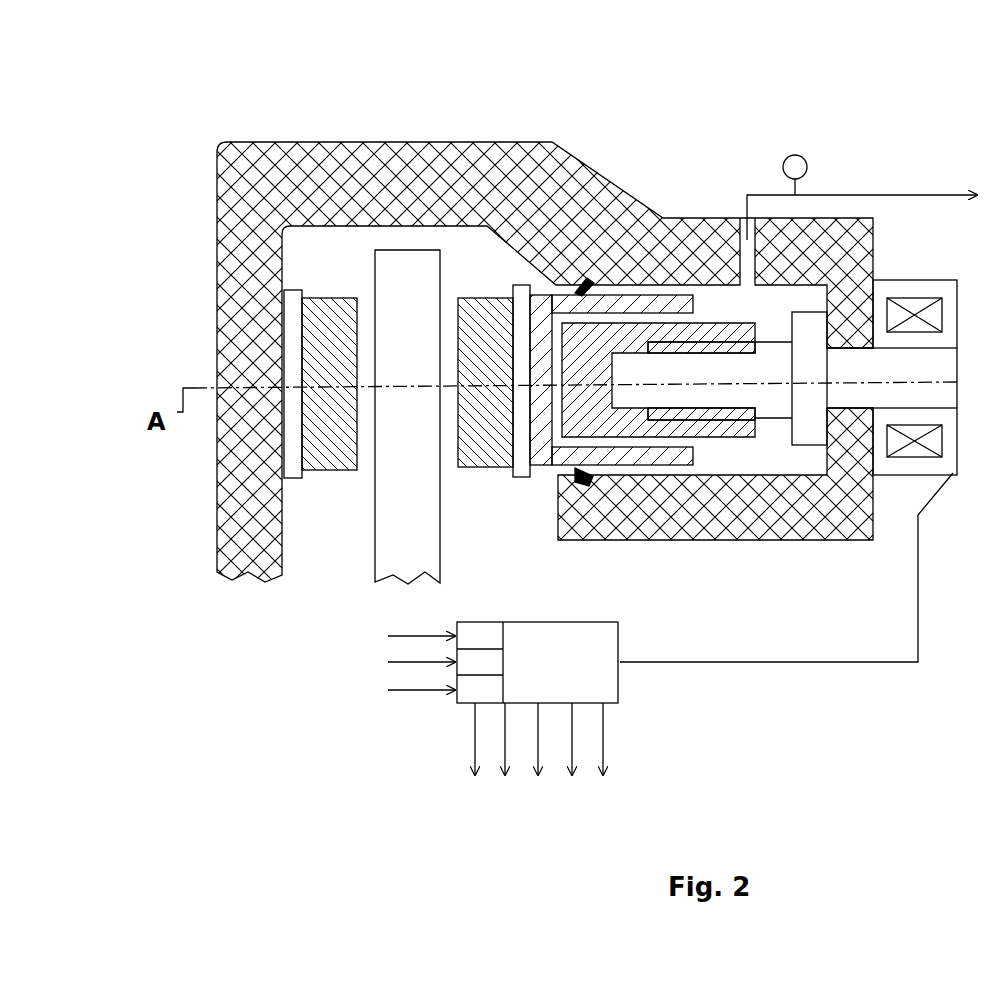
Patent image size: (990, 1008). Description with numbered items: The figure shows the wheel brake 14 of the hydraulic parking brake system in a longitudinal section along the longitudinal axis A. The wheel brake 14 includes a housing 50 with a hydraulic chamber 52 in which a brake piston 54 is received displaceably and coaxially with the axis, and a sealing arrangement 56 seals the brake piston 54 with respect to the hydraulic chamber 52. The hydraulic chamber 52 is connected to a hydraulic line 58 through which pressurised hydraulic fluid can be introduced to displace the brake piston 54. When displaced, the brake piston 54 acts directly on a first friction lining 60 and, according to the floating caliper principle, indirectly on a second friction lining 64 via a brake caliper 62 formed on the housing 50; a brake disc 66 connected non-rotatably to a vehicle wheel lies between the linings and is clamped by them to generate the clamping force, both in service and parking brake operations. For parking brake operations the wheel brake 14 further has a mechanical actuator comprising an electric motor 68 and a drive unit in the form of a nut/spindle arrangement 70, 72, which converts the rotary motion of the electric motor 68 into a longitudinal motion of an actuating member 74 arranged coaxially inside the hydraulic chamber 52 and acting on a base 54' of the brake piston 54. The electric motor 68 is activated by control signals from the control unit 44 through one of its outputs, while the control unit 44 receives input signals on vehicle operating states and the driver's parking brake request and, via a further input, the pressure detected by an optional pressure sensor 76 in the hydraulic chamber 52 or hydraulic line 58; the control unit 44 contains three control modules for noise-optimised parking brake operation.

The wheel brake 14 is at (140, 260).
The brake caliper 62 is at (293, 160).
The hydraulic chamber 52 is at (783, 318).
The pressure sensor 76 is at (802, 156).
The hydraulic line 58 is at (858, 195).
The electric motor 68 is at (925, 463).
The second friction lining 64 is at (325, 470).
The brake disc 66 is at (395, 555).
The first friction lining 60 is at (485, 465).
The brake piston 54 is at (528, 414).
The base of the brake piston 54' is at (608, 266).
The sealing arrangement 56 is at (572, 490).
The nut of the nut/spindle arrangement 70 is at (707, 428).
The actuating member 74 is at (570, 398).
The spindle of the nut/spindle arrangement 72 is at (767, 400).
The housing 50 is at (603, 198).
The control unit 44 is at (508, 716).